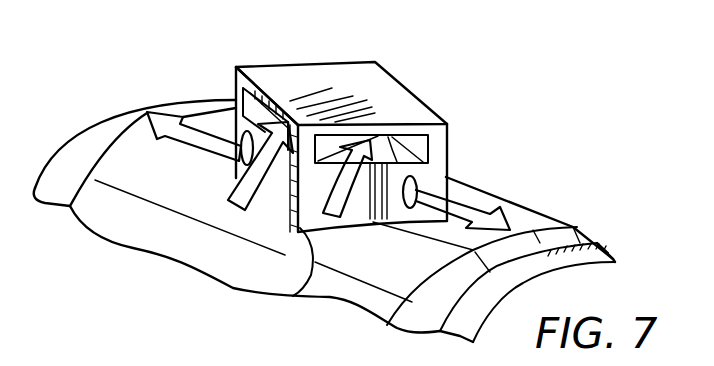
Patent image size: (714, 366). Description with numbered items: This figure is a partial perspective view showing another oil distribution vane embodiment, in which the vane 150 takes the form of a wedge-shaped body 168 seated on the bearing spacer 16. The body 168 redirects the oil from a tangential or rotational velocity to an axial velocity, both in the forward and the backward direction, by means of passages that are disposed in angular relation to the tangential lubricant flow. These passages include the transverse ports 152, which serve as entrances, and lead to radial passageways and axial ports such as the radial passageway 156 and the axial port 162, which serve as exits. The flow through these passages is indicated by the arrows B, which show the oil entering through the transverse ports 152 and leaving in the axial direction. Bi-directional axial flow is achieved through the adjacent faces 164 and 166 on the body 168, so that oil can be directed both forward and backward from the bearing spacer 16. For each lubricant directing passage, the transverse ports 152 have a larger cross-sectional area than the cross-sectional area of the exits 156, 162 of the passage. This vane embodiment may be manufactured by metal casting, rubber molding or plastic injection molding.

The bearing spacer 16 is at (272, 272).
The vane 150 is at (458, 135).
The transverse ports 152 is at (256, 96).
The radial passageway 156 is at (416, 190).
The axial port 162 is at (237, 166).
The face 164 is at (288, 290).
The face 166 is at (278, 185).
The wedge-shaped body 168 is at (381, 97).
The arrows B is at (332, 220).